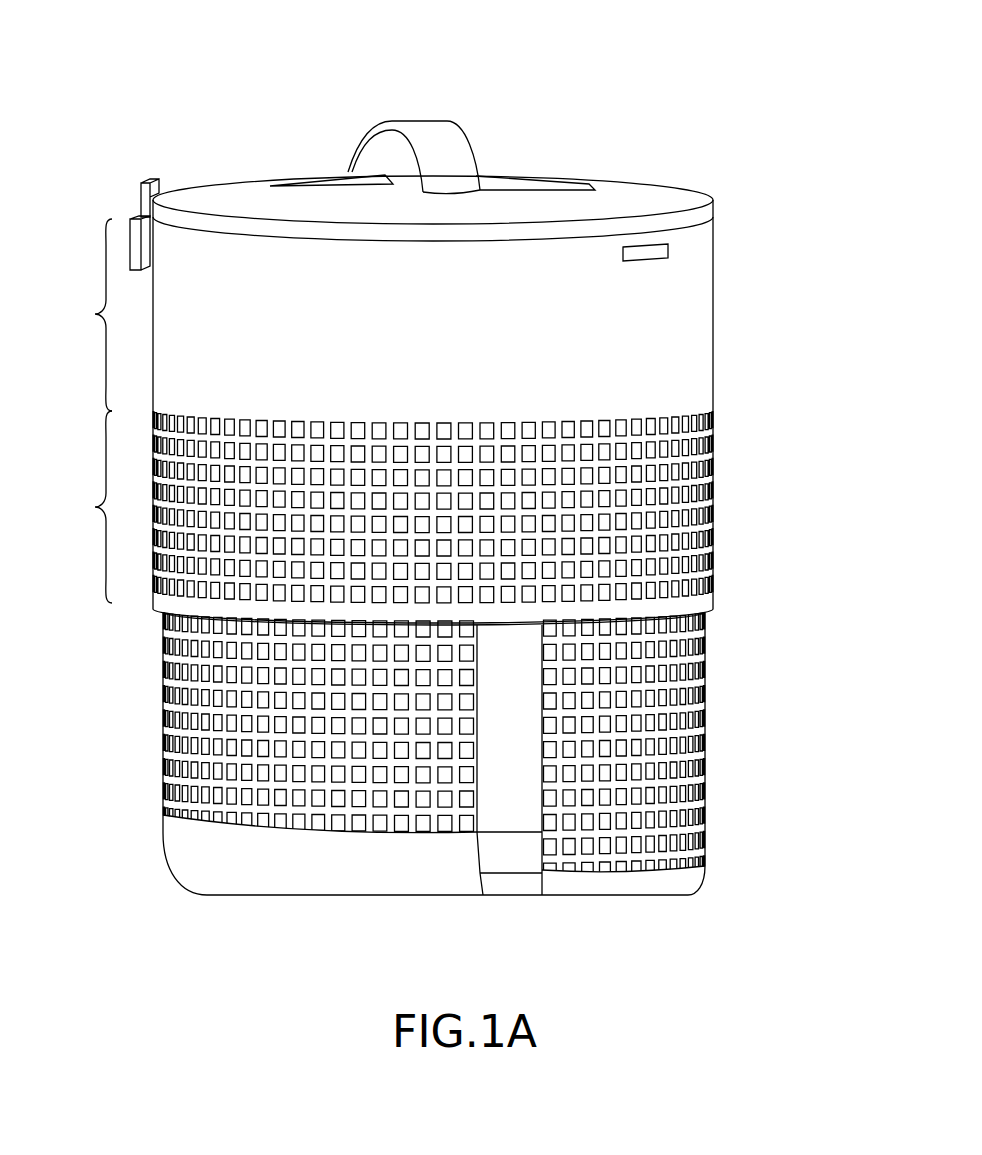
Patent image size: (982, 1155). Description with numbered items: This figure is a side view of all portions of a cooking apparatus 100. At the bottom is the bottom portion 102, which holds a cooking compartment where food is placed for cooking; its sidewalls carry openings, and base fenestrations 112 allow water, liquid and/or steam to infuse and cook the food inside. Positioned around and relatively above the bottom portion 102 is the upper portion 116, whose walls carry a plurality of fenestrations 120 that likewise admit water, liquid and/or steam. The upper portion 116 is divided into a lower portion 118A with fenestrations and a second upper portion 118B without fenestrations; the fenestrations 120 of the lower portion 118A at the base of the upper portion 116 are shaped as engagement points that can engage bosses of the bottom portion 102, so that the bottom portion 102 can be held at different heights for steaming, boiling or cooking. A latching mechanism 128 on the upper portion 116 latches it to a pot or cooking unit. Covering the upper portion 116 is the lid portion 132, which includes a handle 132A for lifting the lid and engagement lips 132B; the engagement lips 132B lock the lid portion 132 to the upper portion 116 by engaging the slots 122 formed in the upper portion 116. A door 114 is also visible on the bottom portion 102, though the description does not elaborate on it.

The cooking apparatus 100 is at (292, 44).
The bottom portion 102 is at (707, 778).
The base fenestrations 112 is at (688, 695).
The door 114 is at (507, 810).
The upper portion 116 is at (714, 361).
The lower portion 118A is at (75, 507).
The second upper portion 118B is at (75, 315).
The fenestrations 120 is at (705, 472).
The slots 122 is at (650, 253).
The latching mechanism 128 is at (140, 199).
The lid portion 132 is at (258, 202).
The handle 132A is at (410, 119).
The engagement lips 132B is at (715, 207).